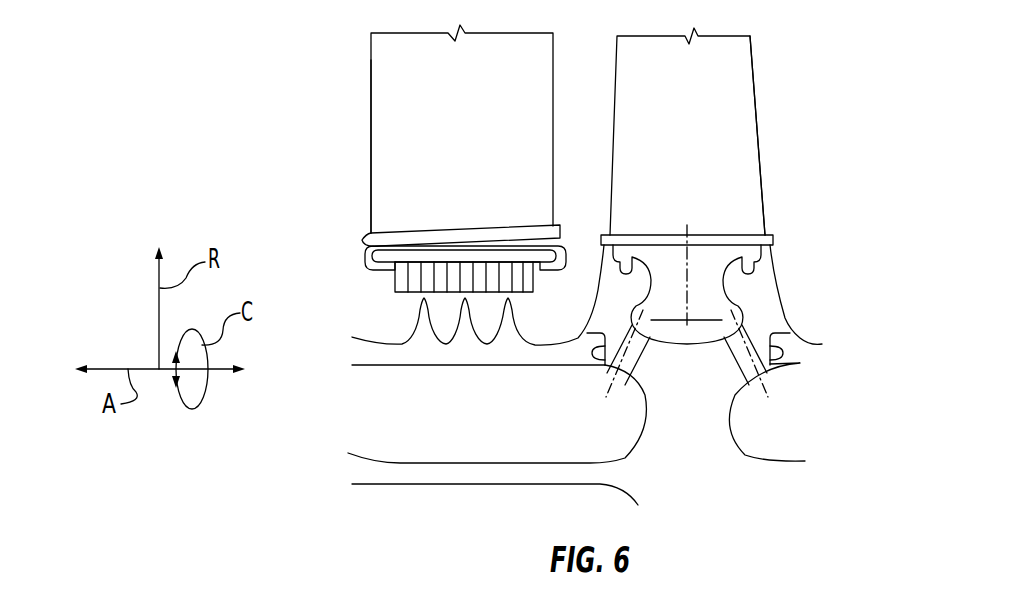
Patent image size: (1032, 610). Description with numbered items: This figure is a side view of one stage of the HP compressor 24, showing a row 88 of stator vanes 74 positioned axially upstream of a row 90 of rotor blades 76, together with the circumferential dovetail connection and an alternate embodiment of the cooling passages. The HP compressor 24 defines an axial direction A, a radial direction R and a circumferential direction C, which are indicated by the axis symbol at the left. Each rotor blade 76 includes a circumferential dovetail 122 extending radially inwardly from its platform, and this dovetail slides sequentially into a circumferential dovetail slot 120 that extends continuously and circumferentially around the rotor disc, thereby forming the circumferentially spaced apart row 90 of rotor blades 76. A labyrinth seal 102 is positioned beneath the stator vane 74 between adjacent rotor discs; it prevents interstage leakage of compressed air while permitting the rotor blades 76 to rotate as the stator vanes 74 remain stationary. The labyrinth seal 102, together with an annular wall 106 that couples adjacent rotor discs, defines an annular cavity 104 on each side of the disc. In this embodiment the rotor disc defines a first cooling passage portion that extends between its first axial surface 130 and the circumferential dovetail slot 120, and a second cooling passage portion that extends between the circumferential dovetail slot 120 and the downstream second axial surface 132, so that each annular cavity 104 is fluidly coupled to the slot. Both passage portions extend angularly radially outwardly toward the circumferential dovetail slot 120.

The HP compressor 24 is at (128, 81).
The stator vane 74 is at (473, 107).
The rotor blade 76 is at (700, 107).
The row of stator vanes 88 is at (371, 97).
The row of rotor blades 90 is at (762, 98).
The circumferential dovetail 122 is at (713, 260).
The circumferential dovetail slot 120 is at (703, 345).
The labyrinth seal 102 is at (427, 352).
The first axial surface 130 is at (640, 400).
The second axial surface 132 is at (739, 386).
The annular cavity 104 is at (466, 440).
The annular wall 106 is at (398, 476).